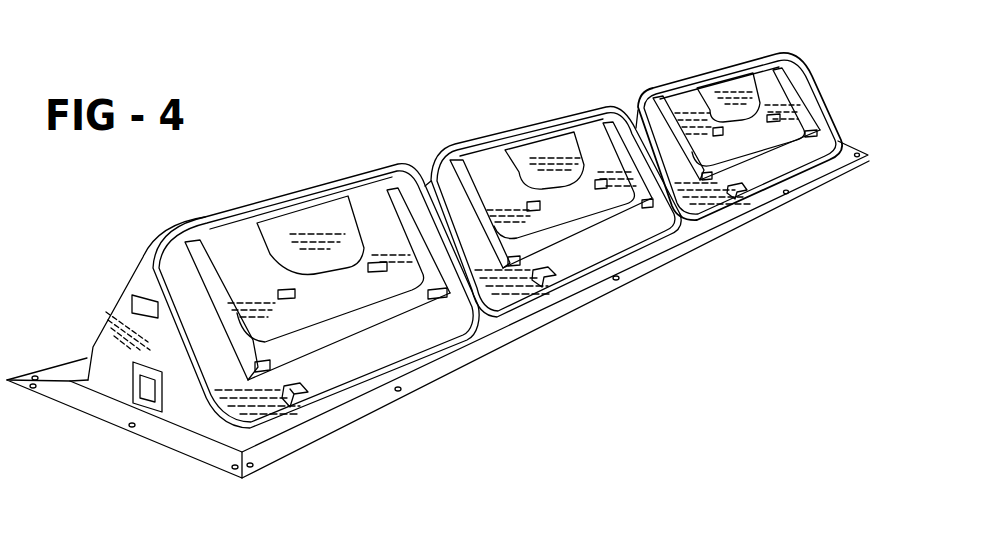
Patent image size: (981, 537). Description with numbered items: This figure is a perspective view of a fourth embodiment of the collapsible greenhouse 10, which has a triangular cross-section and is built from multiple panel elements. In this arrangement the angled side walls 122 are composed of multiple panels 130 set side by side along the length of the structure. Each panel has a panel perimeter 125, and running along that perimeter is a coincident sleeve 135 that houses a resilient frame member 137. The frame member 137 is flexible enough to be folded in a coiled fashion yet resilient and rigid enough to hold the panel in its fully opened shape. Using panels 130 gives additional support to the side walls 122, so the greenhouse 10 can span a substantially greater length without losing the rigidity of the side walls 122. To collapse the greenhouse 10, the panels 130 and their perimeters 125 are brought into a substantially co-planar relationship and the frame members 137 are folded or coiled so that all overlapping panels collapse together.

The greenhouse 10 is at (331, 129).
The side walls 122 is at (788, 165).
The panel perimeter 125 is at (645, 252).
The panels 130 is at (515, 292).
The sleeve 135 is at (668, 243).
The resilient frame member 137 is at (680, 227).